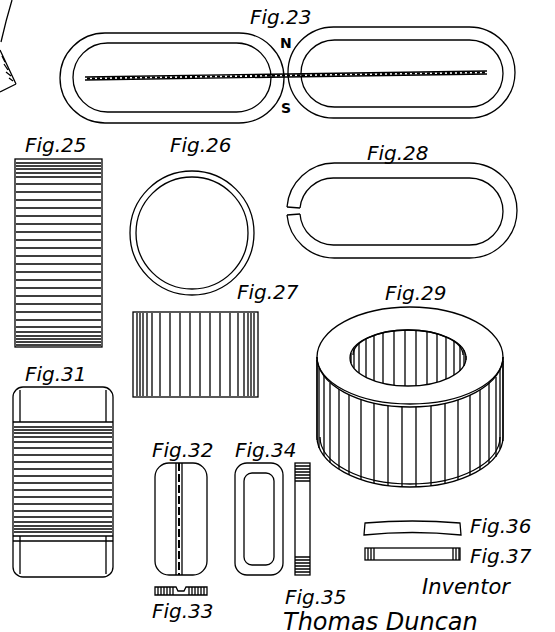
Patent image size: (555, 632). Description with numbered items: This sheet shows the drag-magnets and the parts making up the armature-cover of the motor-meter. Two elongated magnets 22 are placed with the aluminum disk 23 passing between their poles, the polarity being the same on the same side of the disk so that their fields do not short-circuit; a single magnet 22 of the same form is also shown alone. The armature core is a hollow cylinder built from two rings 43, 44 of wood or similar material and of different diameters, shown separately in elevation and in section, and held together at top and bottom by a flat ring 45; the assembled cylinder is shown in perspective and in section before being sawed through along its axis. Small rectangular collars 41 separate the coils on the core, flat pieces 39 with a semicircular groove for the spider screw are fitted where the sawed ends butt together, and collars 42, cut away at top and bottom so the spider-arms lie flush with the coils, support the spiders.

In FIG. 23, the permanent magnet ring 22 is at (123, 119).
In FIG. 28, the permanent magnet ring 22 is at (437, 171).
In FIG. 23, the aluminum disk 23 is at (212, 75).
In FIG. 32, the flat pieces 39 is at (167, 527).
In FIG. 33, the flat pieces 39 is at (208, 591).
In FIG. 34, the rectangular-shaped collars 41 is at (242, 553).
In FIG. 35, the rectangular-shaped collars 41 is at (305, 539).
In FIG. 36, the collars 42 is at (439, 526).
In FIG. 37, the collars 42 is at (390, 554).
In FIG. 25, the laminated core ring 43 is at (93, 209).
In FIG. 29, the laminated core ring 43 is at (481, 426).
In FIG. 31, the laminated core ring 43 is at (84, 388).
In FIG. 26, the inner ring 44 is at (139, 261).
In FIG. 27, the inner ring 44 is at (256, 361).
In FIG. 29, the inner ring 44 is at (424, 351).
In FIG. 31, the inner ring 44 is at (98, 541).
In FIG. 29, the flat ring 45 is at (491, 353).
In FIG. 31, the flat ring 45 is at (106, 403).